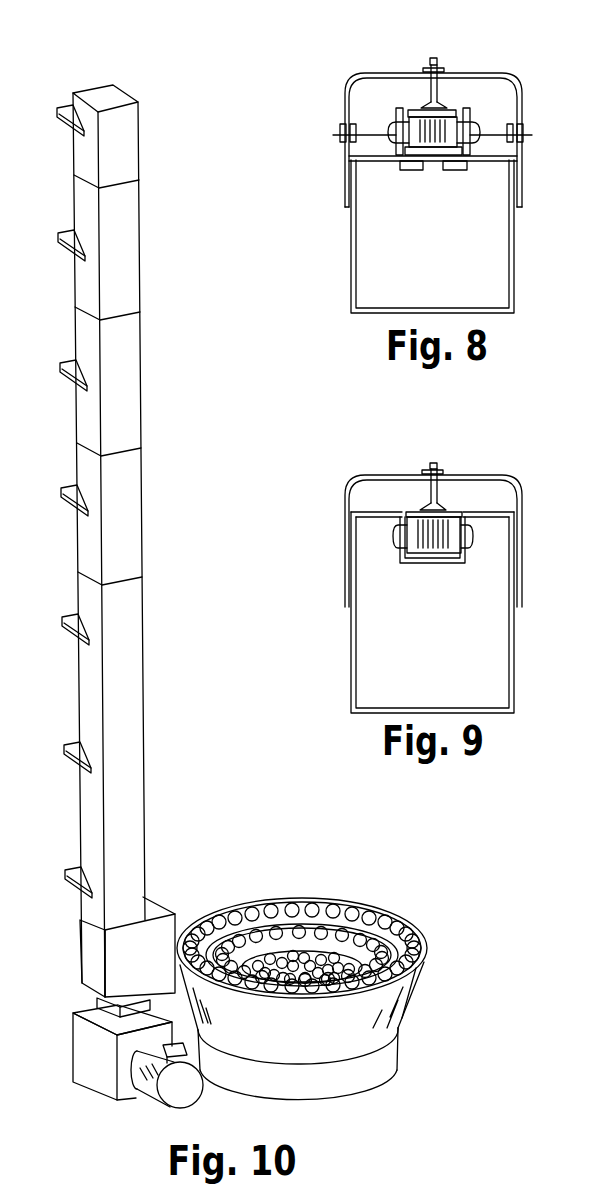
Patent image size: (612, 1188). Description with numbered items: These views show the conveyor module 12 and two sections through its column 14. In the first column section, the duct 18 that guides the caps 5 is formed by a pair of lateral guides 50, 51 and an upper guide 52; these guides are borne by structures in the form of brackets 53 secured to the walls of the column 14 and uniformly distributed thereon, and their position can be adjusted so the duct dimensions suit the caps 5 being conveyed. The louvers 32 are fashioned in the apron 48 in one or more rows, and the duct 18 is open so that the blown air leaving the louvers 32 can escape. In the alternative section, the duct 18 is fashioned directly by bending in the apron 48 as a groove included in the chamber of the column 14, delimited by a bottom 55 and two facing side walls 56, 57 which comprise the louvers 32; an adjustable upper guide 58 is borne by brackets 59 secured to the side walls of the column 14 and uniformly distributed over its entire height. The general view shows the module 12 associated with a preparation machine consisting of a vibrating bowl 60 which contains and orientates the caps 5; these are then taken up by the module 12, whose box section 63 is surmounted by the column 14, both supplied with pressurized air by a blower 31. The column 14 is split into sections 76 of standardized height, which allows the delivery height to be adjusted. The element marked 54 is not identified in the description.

In FIG. 8, the caps 5 is at (412, 110).
In FIG. 9, the caps 5 is at (450, 511).
In FIG. 10, the caps 5 is at (320, 973).
In FIG. 10, the module 12 is at (168, 874).
In FIG. 8, the column 14 is at (516, 262).
In FIG. 9, the column 14 is at (516, 645).
In FIG. 10, the column 14 is at (132, 710).
In FIG. 8, the duct 18 is at (466, 98).
In FIG. 9, the duct 18 is at (466, 497).
In FIG. 10, the blower 31 is at (80, 1045).
In FIG. 8, the louvers 32 is at (455, 170).
In FIG. 9, the louvers 32 is at (396, 535).
In FIG. 8, the apron 48 is at (360, 160).
In FIG. 9, the apron 48 is at (366, 516).
In FIG. 8, the lateral guide 50 is at (396, 112).
In FIG. 8, the lateral guide 51 is at (466, 112).
In FIG. 8, the upper guide 52 is at (460, 110).
In FIG. 8, the brackets 53 is at (520, 77).
In FIG. 10, the brackets 53 is at (62, 494).
In FIG. 8, the frame legs 54 is at (348, 246).
In FIG. 9, the bottom 55 is at (433, 565).
In FIG. 9, the side wall 56 is at (400, 556).
In FIG. 9, the side wall 57 is at (476, 518).
In FIG. 9, the adjustable upper guide 58 is at (413, 511).
In FIG. 9, the brackets 59 is at (518, 480).
In FIG. 10, the vibrating bowl 60 is at (428, 998).
In FIG. 10, the box section 63 is at (83, 955).
In FIG. 10, the sections 76 is at (133, 278).